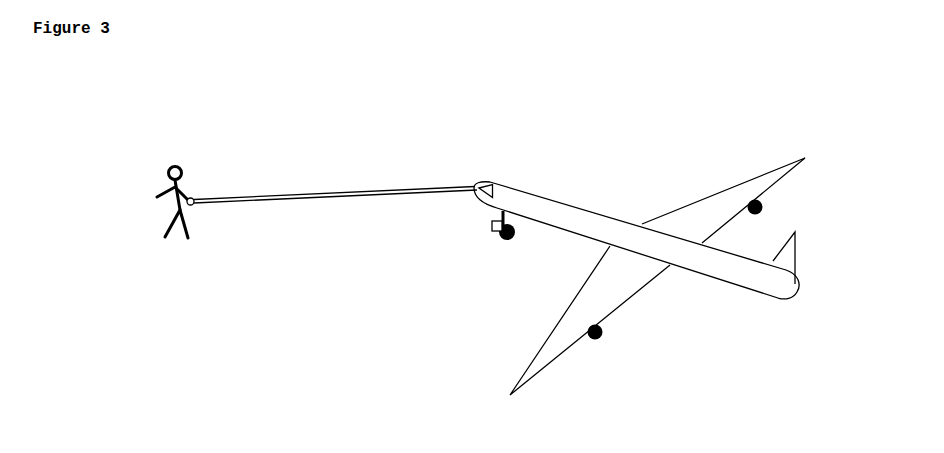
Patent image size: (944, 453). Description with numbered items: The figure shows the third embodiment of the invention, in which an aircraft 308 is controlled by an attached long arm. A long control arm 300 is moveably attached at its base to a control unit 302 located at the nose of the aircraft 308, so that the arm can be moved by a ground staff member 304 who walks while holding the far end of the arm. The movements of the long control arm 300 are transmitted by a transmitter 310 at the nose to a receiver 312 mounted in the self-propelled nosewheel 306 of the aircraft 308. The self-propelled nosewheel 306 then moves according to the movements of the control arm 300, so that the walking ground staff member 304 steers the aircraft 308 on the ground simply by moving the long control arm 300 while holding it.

The long control arm 300 is at (347, 193).
The control unit 302 is at (486, 183).
The ground staff member 304 is at (183, 226).
The self-propelled nosewheel 306 is at (498, 238).
The aircraft 308 is at (558, 241).
The transmitter 310 is at (497, 184).
The receiver 312 is at (493, 226).